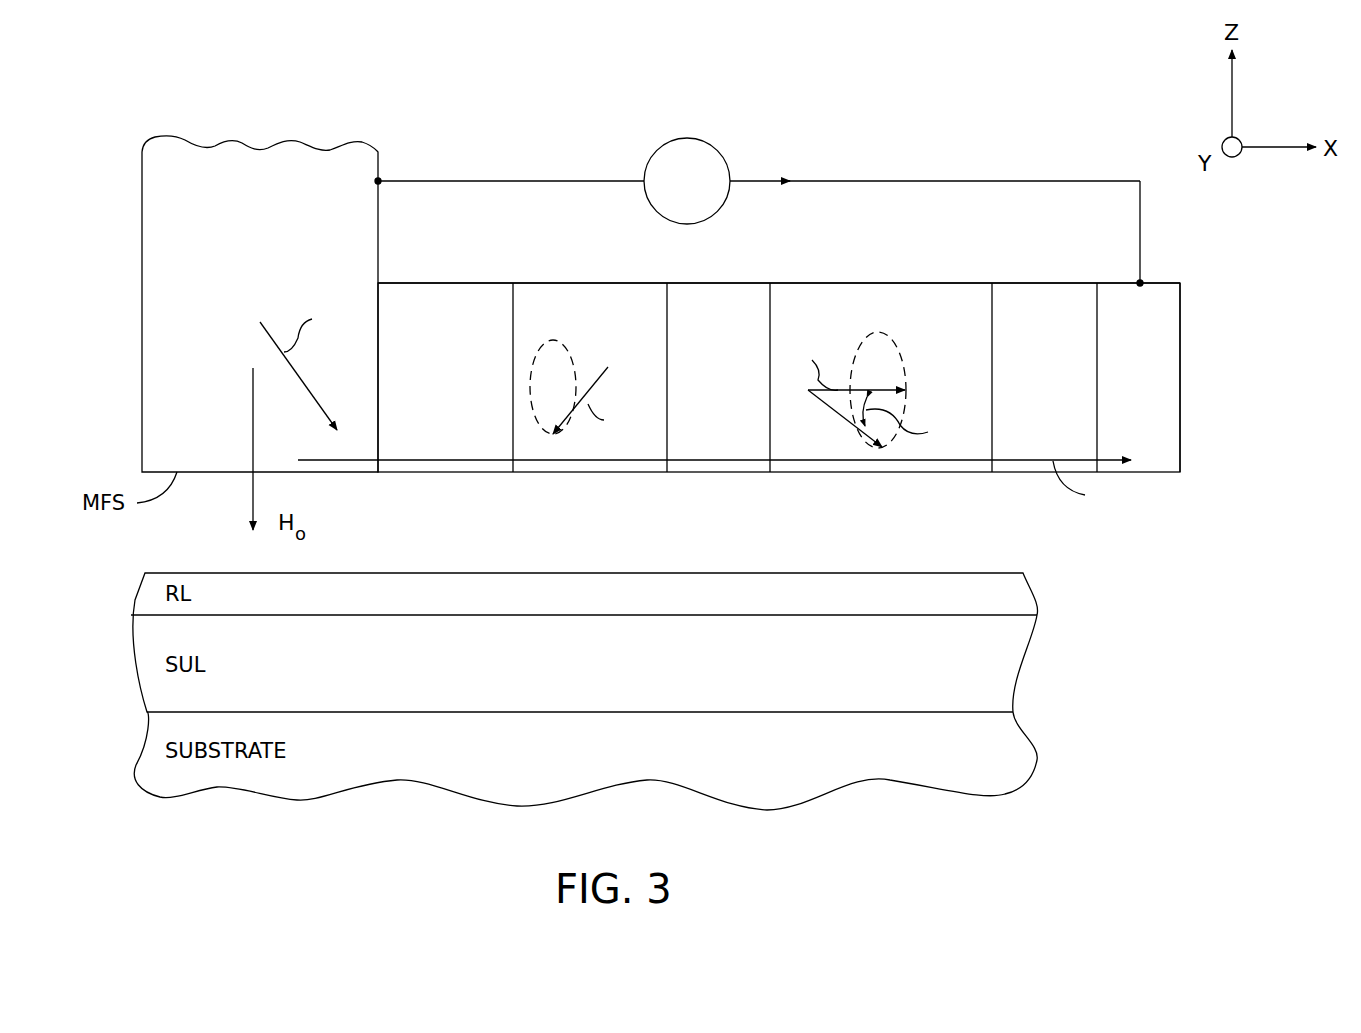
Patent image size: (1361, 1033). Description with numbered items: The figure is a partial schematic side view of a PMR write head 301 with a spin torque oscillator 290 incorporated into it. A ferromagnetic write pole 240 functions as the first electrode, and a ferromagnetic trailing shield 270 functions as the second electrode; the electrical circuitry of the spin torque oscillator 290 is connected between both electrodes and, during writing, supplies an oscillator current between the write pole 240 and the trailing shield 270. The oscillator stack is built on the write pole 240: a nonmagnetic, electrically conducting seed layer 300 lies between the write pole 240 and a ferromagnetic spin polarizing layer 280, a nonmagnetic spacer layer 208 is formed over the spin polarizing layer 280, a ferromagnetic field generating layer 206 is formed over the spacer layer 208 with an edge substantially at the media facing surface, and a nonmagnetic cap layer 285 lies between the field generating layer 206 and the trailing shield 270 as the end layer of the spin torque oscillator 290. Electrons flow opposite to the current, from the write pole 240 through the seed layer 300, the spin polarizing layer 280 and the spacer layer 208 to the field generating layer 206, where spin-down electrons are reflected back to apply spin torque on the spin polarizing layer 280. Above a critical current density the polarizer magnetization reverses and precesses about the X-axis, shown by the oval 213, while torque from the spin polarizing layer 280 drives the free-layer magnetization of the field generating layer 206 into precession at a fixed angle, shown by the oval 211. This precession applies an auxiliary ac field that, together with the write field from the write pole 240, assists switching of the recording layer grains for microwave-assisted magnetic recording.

The write pole 240 is at (158, 250).
The spin torque oscillator 290 is at (506, 210).
The seed layer 300 is at (462, 283).
The spin polarizing layer 280 is at (592, 283).
The spacer layer 208 is at (720, 283).
The field generating layer 206 is at (840, 283).
The cap layer 285 is at (1025, 283).
The trailing shield 270 is at (1120, 283).
The oval 213 is at (578, 362).
The oval 211 is at (902, 362).
The write head 301 is at (1060, 72).